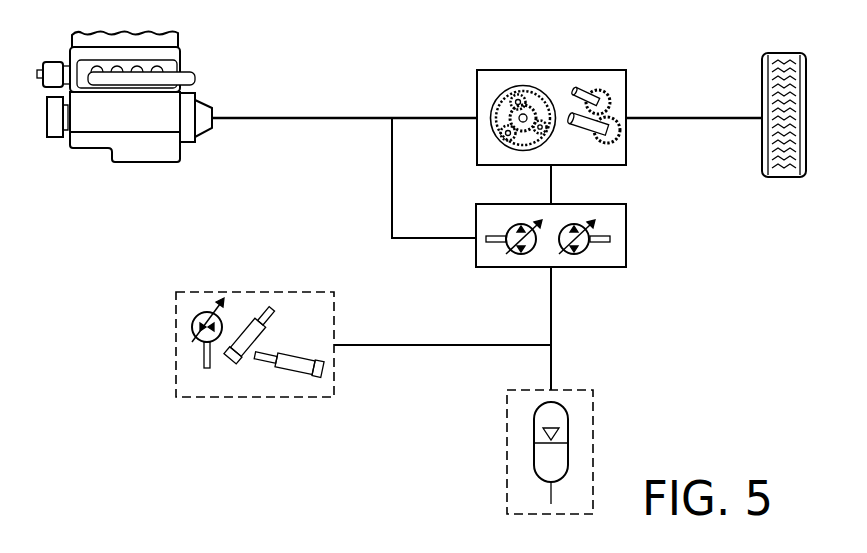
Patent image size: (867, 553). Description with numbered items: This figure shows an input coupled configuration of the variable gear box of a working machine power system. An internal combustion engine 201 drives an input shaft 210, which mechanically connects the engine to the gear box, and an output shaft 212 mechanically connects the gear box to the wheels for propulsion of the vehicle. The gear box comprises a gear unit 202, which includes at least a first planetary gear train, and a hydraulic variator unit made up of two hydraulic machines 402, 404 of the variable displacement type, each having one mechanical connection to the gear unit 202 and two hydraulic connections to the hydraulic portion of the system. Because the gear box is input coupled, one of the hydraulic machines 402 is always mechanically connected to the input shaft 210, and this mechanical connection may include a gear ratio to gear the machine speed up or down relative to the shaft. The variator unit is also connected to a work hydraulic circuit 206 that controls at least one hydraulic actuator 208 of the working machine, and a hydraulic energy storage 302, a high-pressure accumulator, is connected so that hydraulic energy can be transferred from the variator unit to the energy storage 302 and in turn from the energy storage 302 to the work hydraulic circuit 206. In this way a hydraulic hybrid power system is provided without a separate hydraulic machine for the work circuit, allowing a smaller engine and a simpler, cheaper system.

The internal combustion engine 201 is at (120, 126).
The input shaft 210 is at (283, 118).
The gear unit 202 is at (558, 70).
The output shaft 212 is at (716, 118).
The hydraulic machine 402 is at (497, 246).
The hydraulic machine 404 is at (603, 246).
The work hydraulic circuit 206 is at (212, 368).
The hydraulic actuator 208 is at (290, 382).
The hydraulic energy storage 302 is at (534, 428).